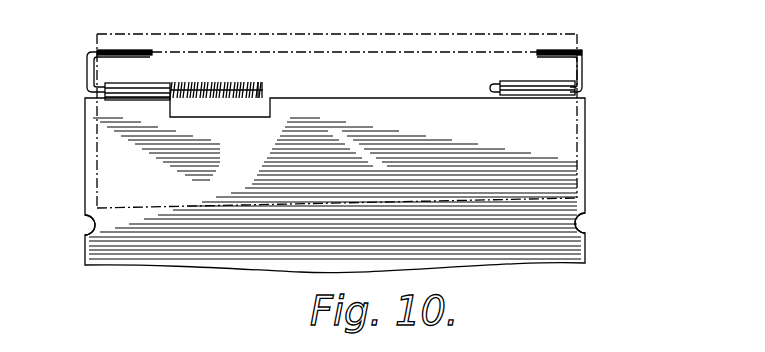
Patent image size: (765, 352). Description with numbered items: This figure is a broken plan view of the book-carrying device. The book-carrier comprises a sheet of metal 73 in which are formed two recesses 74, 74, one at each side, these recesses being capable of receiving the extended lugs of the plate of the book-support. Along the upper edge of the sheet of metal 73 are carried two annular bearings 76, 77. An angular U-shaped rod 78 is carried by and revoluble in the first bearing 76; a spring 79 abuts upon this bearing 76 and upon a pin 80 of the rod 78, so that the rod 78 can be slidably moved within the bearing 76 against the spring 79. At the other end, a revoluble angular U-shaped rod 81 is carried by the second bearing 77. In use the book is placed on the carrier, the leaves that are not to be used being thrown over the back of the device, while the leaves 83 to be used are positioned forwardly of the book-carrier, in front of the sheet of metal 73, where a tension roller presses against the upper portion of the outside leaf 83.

The sheet of metal 73 is at (562, 132).
The recesses 74 is at (580, 217).
The annular bearing 76 is at (138, 88).
The annular bearing 77 is at (530, 77).
The angular U-shaped rod 78 is at (133, 53).
The spring 79 is at (205, 85).
The pin 80 is at (263, 85).
The revoluble angular U-shaped rod 81 is at (581, 65).
The leaves 83 is at (572, 158).